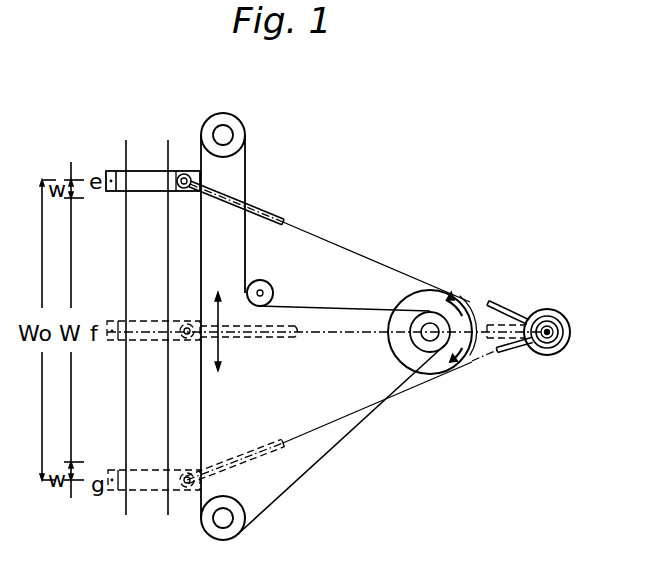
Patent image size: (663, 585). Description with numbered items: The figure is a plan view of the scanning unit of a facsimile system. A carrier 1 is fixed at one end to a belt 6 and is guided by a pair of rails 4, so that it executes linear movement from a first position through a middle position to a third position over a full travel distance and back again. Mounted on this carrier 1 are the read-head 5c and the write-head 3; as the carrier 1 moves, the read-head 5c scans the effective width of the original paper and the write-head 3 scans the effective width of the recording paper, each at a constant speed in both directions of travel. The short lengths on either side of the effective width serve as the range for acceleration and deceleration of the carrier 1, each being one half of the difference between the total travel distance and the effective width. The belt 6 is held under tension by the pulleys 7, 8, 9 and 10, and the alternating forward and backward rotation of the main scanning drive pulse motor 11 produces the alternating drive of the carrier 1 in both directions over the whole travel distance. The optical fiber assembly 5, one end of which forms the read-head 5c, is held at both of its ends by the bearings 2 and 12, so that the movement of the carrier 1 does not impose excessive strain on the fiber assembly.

The carrier 1 is at (145, 171).
The bearing 2 is at (179, 171).
The write-head 3 is at (109, 171).
The rails 4 is at (167, 280).
The optical fiber assembly 5 is at (285, 221).
The read-head 5c is at (184, 189).
The belt 6 is at (246, 168).
The pulley 7 is at (433, 312).
The pulley 8 is at (247, 108).
The pulley 9 is at (244, 500).
The pulley 10 is at (271, 293).
The main scanning drive pulse motor 11 is at (468, 301).
The bearing 12 is at (562, 315).